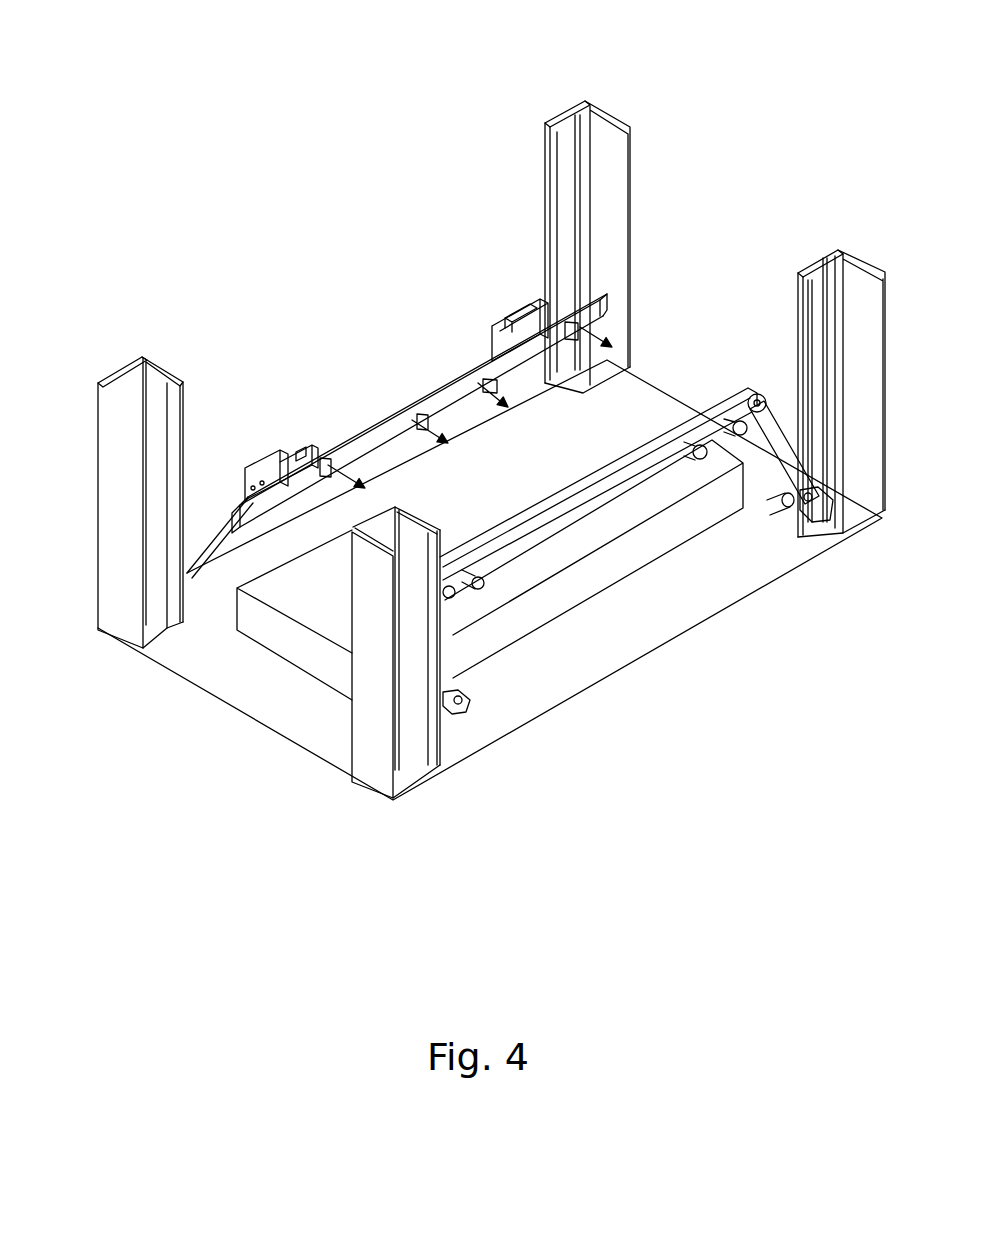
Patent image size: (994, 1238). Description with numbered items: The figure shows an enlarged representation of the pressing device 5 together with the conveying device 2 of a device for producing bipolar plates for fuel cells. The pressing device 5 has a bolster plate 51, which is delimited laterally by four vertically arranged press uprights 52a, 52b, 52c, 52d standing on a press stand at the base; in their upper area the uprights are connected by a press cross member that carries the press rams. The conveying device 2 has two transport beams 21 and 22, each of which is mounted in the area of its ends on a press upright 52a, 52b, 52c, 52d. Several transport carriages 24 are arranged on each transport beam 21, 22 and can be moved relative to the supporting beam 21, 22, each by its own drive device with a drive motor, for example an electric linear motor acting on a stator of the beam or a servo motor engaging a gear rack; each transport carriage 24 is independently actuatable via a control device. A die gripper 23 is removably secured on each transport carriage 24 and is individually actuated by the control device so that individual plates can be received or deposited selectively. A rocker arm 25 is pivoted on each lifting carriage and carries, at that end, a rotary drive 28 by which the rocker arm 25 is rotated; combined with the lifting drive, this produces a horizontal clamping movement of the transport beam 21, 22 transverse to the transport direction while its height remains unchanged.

The conveying device 2 is at (536, 519).
The pressing device 5 is at (633, 713).
The transport beam 21 is at (383, 423).
The transport beam 22 is at (630, 480).
The die gripper 23 is at (577, 333).
The transport carriage 24 is at (612, 295).
The rocker arm 25 is at (760, 410).
The rotary drive 28 is at (664, 664).
The bolster plate 51 is at (257, 620).
The press upright 52a is at (115, 427).
The press upright 52b is at (377, 760).
The press upright 52c is at (598, 107).
The press upright 52d is at (855, 260).